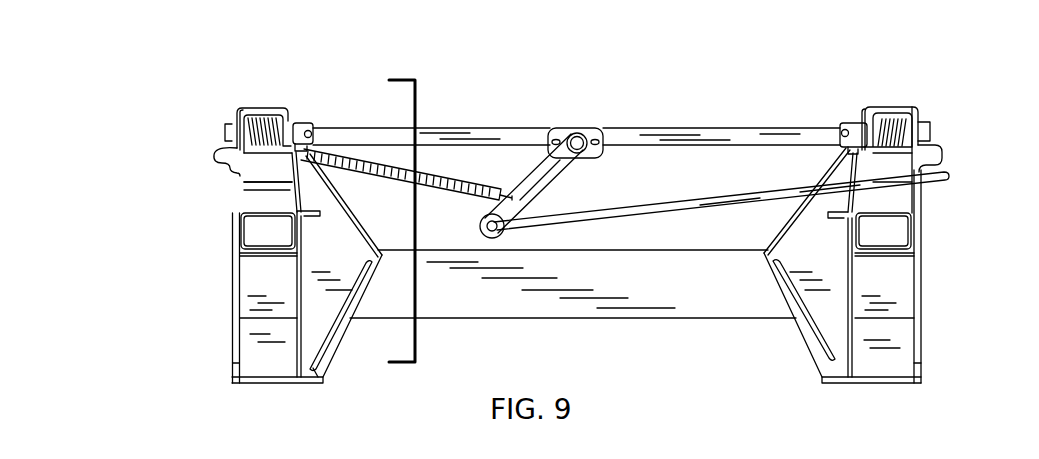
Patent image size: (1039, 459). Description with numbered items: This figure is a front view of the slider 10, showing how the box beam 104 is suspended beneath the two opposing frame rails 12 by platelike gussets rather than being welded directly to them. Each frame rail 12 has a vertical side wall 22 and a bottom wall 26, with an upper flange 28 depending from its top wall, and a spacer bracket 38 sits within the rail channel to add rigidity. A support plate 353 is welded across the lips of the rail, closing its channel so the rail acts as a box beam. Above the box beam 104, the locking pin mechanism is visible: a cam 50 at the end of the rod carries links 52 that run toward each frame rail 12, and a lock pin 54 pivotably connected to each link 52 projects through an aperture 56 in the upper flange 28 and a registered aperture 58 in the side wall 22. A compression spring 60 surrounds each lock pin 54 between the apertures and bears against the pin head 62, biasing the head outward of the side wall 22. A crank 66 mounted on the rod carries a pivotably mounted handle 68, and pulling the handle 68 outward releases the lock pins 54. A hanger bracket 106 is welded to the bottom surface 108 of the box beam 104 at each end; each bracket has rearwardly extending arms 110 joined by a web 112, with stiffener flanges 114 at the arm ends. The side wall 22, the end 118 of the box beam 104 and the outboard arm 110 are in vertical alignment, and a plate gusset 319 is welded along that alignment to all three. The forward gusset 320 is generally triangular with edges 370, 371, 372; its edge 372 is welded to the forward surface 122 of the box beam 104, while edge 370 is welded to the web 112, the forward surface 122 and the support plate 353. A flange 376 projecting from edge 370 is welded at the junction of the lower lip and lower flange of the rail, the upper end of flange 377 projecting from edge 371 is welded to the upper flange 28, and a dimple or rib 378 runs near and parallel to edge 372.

The slider 10 is at (387, 221).
The frame rail 12 is at (315, 111).
The side wall 22 is at (240, 240).
The bottom wall 26 is at (256, 253).
The upper flange 28 is at (843, 148).
The spacer bracket 38 is at (262, 190).
The cam 50 is at (589, 130).
The link 52 is at (458, 140).
The lock pin 54 is at (898, 114).
The aperture 56 is at (867, 120).
The aperture 58 is at (920, 114).
The compression spring 60 is at (885, 114).
The head 62 is at (931, 128).
The crank 66 is at (543, 178).
The handle 68 is at (617, 212).
The box beam 104 is at (571, 305).
The hanger bracket 106 is at (880, 392).
The bottom surface 108 is at (667, 320).
The arm 110 is at (238, 332).
The web 112 is at (260, 354).
The stiffener flange 114 is at (235, 368).
The end 118 is at (238, 287).
The forward surface 122 is at (452, 300).
The plate gusset 319 is at (238, 266).
The forward gusset 320 is at (348, 283).
The support plate 353 is at (257, 183).
The edge 370 is at (283, 347).
The edge 371 is at (358, 220).
The edge 372 is at (345, 339).
The flange 376 is at (301, 254).
The flange 377 is at (342, 202).
The dimple or rib 378 is at (325, 362).